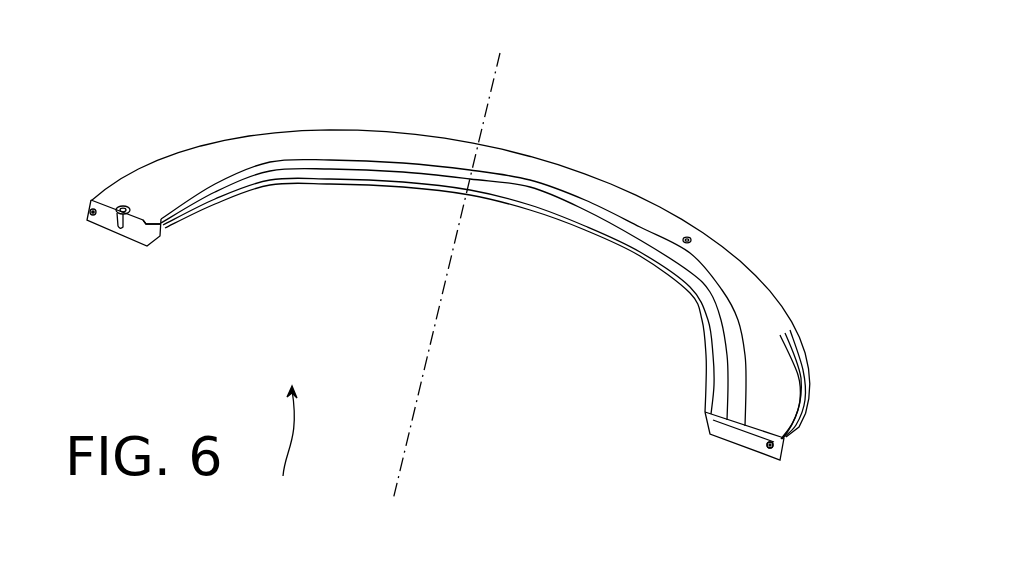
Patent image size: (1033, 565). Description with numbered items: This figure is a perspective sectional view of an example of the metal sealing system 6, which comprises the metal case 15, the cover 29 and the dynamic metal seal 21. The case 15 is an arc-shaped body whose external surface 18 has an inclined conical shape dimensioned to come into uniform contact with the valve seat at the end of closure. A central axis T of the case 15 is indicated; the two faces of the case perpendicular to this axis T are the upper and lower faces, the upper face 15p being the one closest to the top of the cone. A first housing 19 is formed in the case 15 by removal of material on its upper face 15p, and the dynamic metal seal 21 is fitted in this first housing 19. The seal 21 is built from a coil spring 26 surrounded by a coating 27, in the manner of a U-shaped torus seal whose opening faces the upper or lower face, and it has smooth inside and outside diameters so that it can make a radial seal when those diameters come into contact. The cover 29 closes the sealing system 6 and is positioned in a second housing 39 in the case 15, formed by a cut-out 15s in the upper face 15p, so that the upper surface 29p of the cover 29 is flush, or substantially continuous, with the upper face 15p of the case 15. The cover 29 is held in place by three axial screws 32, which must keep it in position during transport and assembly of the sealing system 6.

The metal case 15 is at (704, 418).
The upper face of the case 15p is at (557, 197).
The cut-out 15s is at (738, 393).
The upper surface of the cover 29p is at (727, 270).
The cover 29 is at (720, 441).
The dynamic metal seal 21 is at (91, 209).
The axial screws 32 is at (122, 206).
The second housing 39 is at (146, 222).
The external surface 18 is at (806, 402).
The first housing 19 is at (803, 415).
The coating 27 is at (800, 436).
The coil spring 26 is at (782, 448).
The metal sealing system 6 is at (279, 445).
The central axis T is at (498, 62).